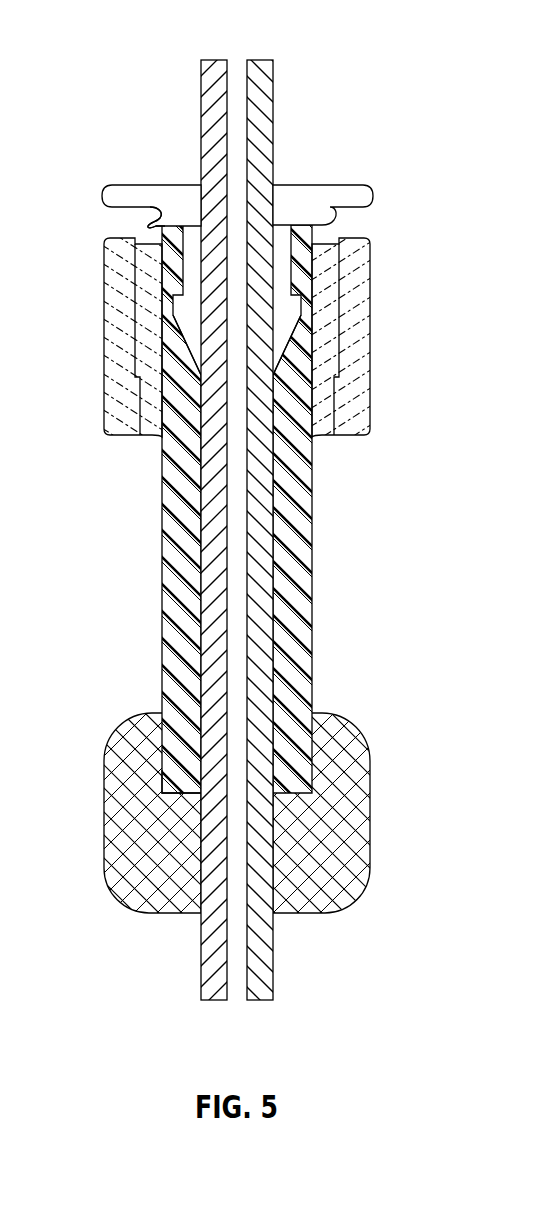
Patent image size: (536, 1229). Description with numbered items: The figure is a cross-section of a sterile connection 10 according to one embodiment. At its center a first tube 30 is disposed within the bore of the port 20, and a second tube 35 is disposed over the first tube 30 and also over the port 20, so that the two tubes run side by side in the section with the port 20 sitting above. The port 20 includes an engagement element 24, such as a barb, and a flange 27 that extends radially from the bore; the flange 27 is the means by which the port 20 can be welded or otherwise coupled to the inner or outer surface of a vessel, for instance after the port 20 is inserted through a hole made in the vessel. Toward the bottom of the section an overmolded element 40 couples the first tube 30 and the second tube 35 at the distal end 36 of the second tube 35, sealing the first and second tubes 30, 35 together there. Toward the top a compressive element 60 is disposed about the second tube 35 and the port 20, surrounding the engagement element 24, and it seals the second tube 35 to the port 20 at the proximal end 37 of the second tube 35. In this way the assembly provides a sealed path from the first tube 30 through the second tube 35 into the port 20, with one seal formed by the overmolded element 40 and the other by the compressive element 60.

The sterile connection 10 is at (366, 36).
The port 20 is at (192, 233).
The engagement element 24 is at (290, 320).
The flange 27 is at (150, 218).
The first tube 30 is at (265, 960).
The second tube 35 is at (310, 585).
The distal end 36 is at (162, 797).
The proximal end 37 is at (160, 229).
The overmolded element 40 is at (350, 768).
The compressive element 60 is at (362, 293).